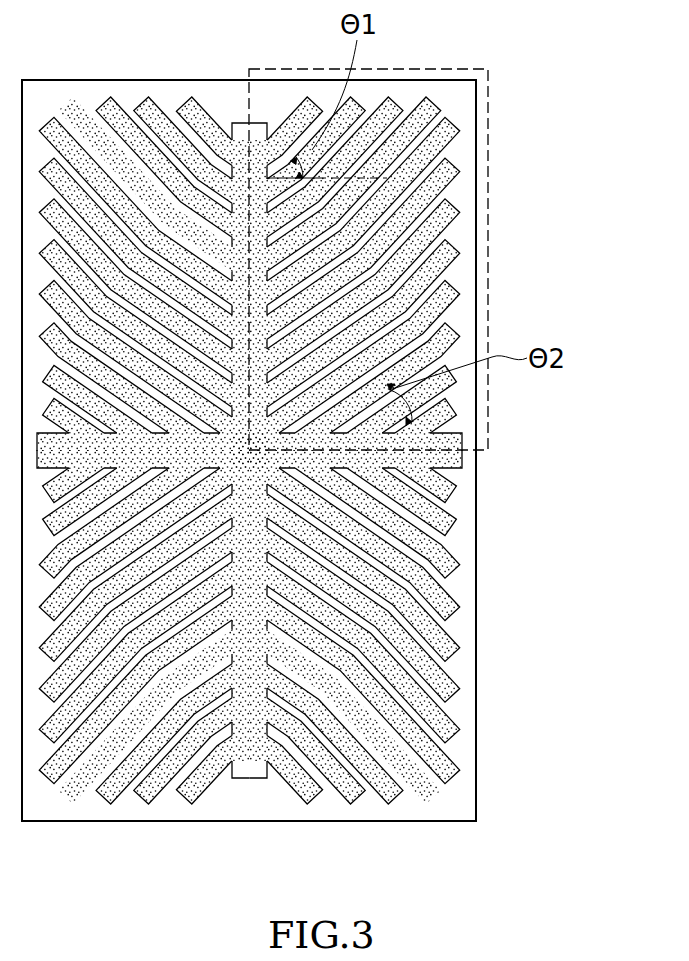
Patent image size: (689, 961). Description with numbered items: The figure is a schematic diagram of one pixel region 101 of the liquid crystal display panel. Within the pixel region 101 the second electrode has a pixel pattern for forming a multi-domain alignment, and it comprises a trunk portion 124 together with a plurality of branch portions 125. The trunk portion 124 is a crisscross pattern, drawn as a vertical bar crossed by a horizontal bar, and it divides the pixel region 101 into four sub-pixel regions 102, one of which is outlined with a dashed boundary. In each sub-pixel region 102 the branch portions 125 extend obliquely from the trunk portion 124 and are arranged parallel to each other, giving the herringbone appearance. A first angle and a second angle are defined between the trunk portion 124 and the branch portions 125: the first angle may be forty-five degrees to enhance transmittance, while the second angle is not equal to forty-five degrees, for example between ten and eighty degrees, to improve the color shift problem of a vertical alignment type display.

The pixel region 101 is at (477, 158).
The sub-pixel region 102 is at (488, 205).
The trunk portion 124 is at (466, 456).
The branch portions 125 is at (447, 110).